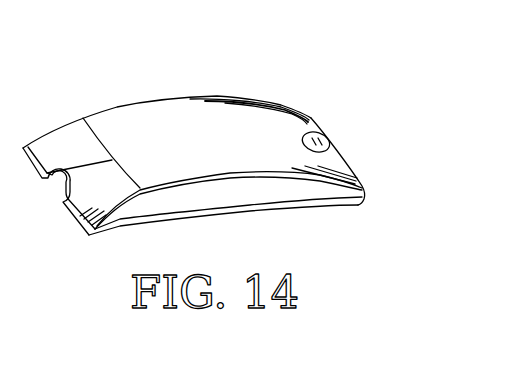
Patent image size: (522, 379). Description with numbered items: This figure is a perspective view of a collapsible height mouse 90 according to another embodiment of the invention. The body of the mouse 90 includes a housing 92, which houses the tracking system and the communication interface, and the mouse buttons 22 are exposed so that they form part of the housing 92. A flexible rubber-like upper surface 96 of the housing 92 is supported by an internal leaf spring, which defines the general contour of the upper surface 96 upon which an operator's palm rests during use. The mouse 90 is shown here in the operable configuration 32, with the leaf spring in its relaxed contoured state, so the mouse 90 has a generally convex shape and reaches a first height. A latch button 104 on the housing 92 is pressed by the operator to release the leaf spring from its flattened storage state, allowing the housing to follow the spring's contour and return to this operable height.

The mouse buttons 22 is at (68, 133).
The operable configuration 32 is at (203, 143).
The collapsible height mouse 90 is at (221, 73).
The housing 92 is at (301, 117).
The upper surface 96 is at (127, 117).
The button 104 is at (323, 143).